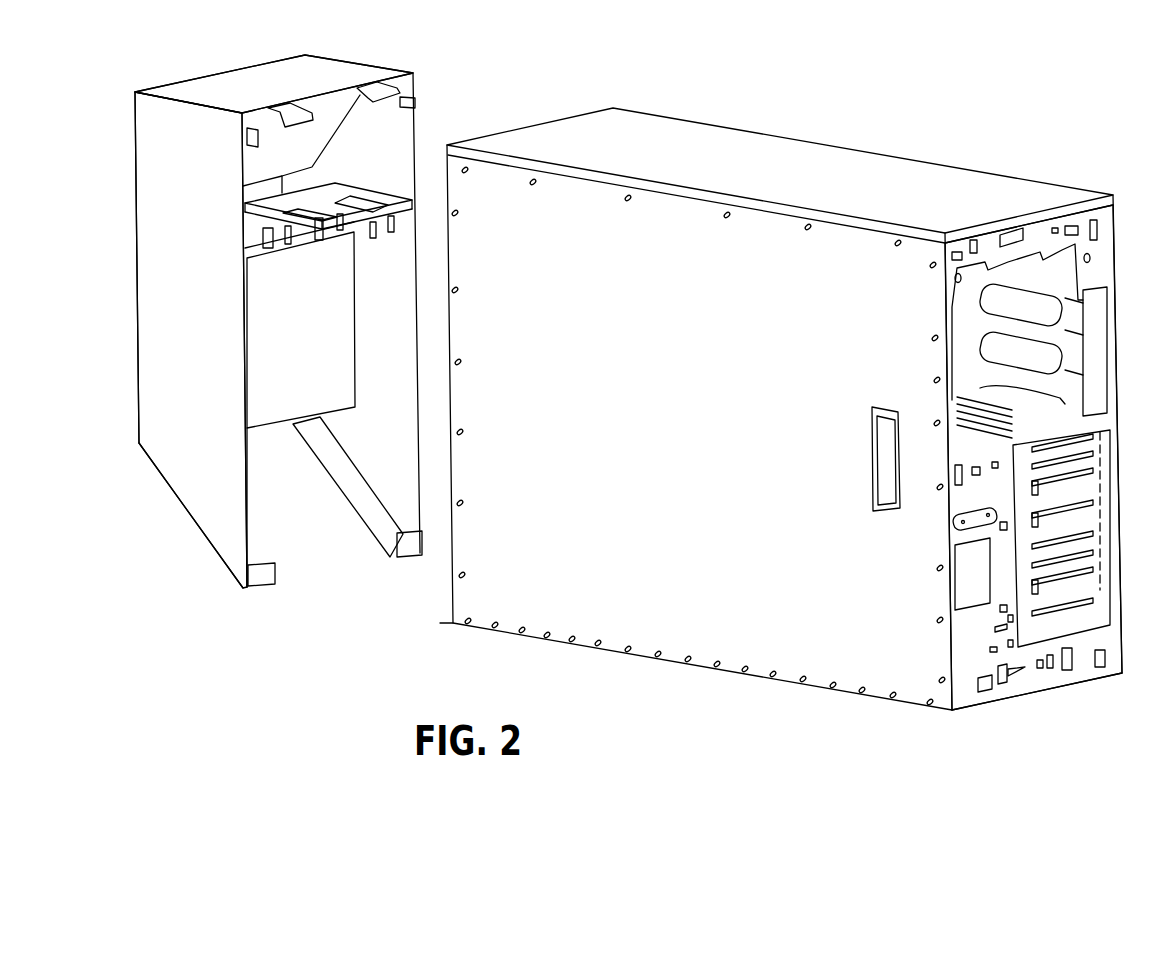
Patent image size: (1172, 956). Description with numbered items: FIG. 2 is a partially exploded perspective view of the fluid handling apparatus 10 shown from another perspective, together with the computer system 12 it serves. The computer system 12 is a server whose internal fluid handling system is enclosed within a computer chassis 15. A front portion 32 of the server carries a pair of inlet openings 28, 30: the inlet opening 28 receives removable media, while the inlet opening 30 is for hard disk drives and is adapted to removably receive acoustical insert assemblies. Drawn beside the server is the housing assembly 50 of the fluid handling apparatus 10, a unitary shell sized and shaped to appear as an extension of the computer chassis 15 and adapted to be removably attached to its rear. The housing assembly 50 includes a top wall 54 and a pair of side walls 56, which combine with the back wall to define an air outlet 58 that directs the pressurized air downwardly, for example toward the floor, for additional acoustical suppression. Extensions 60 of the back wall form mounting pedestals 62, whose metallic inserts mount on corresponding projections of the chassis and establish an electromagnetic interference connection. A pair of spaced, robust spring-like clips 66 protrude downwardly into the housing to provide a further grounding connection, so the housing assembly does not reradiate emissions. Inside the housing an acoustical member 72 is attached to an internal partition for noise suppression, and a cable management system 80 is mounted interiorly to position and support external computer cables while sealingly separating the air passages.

The fluid handling apparatus 10 is at (650, 365).
The computer system 12 is at (803, 398).
The computer chassis 15 is at (700, 140).
The inlet opening 28 is at (980, 310).
The inlet opening 30 is at (1097, 472).
The front portion 32 is at (1110, 233).
The housing assembly 50 is at (297, 310).
The top wall 54 is at (270, 99).
The side walls 56 is at (202, 230).
The air outlet 58 is at (308, 513).
The extensions 60 is at (352, 522).
The mounting pedestals 62 is at (278, 570).
The spring-like clips 66 is at (290, 103).
The acoustical member 72 is at (307, 338).
The cable management system 80 is at (352, 180).